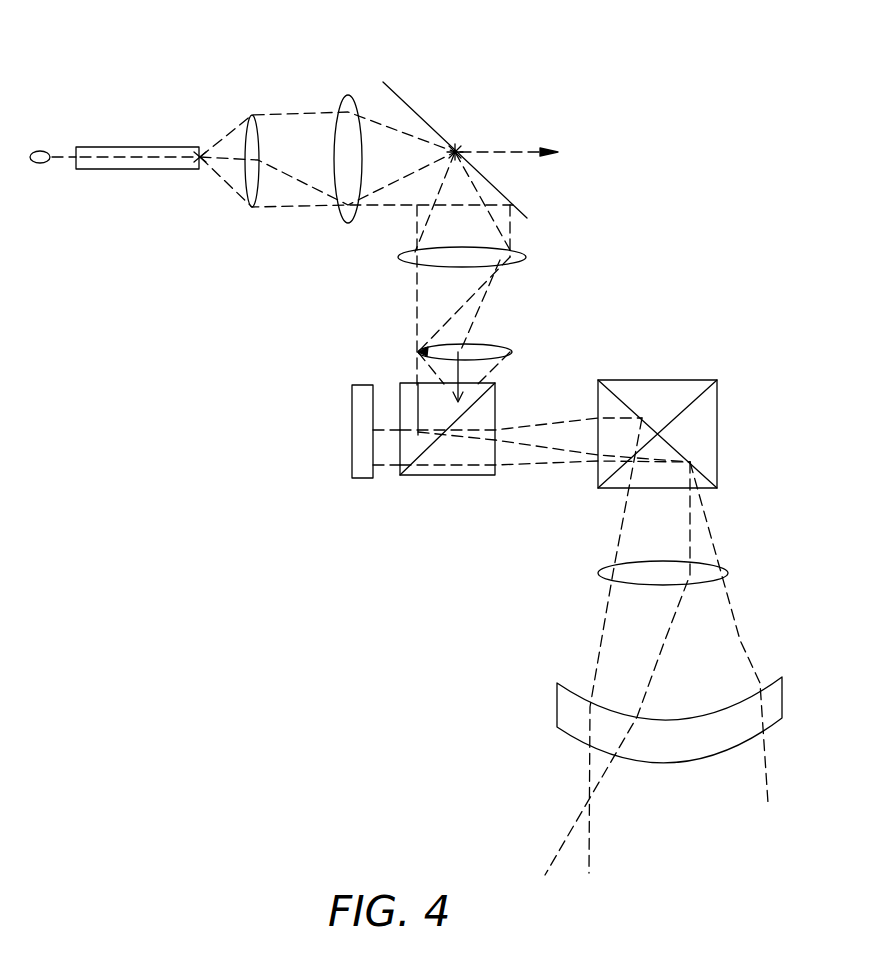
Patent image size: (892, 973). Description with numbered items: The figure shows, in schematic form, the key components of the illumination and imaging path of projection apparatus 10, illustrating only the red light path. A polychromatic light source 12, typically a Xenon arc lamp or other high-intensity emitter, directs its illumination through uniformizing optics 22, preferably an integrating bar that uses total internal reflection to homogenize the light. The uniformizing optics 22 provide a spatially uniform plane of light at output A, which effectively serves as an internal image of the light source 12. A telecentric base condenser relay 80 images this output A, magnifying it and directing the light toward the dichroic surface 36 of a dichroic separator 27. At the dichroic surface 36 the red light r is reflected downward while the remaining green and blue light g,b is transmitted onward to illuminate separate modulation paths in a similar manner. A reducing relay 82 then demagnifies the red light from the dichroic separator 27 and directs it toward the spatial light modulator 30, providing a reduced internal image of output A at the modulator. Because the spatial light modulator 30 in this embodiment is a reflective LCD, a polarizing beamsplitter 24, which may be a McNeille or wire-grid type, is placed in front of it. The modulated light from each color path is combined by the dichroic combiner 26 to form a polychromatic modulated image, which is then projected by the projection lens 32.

The projection apparatus 10 is at (200, 685).
The polychromatic light source 12 is at (42, 190).
The uniformizing optics 22 is at (137, 169).
The output A is at (200, 150).
The telecentric base condenser relay 80 is at (355, 87).
The dichroic surface 36 is at (410, 110).
The dichroic separator 27 is at (456, 151).
The green and blue light path g,b is at (513, 150).
The red light path r is at (427, 220).
The reducing relay 82 is at (378, 248).
The spatial light modulator 30 is at (352, 430).
The polarizing beamsplitter 24 is at (448, 478).
The dichroic combiner 26 is at (717, 422).
The projection lens 32 is at (745, 621).